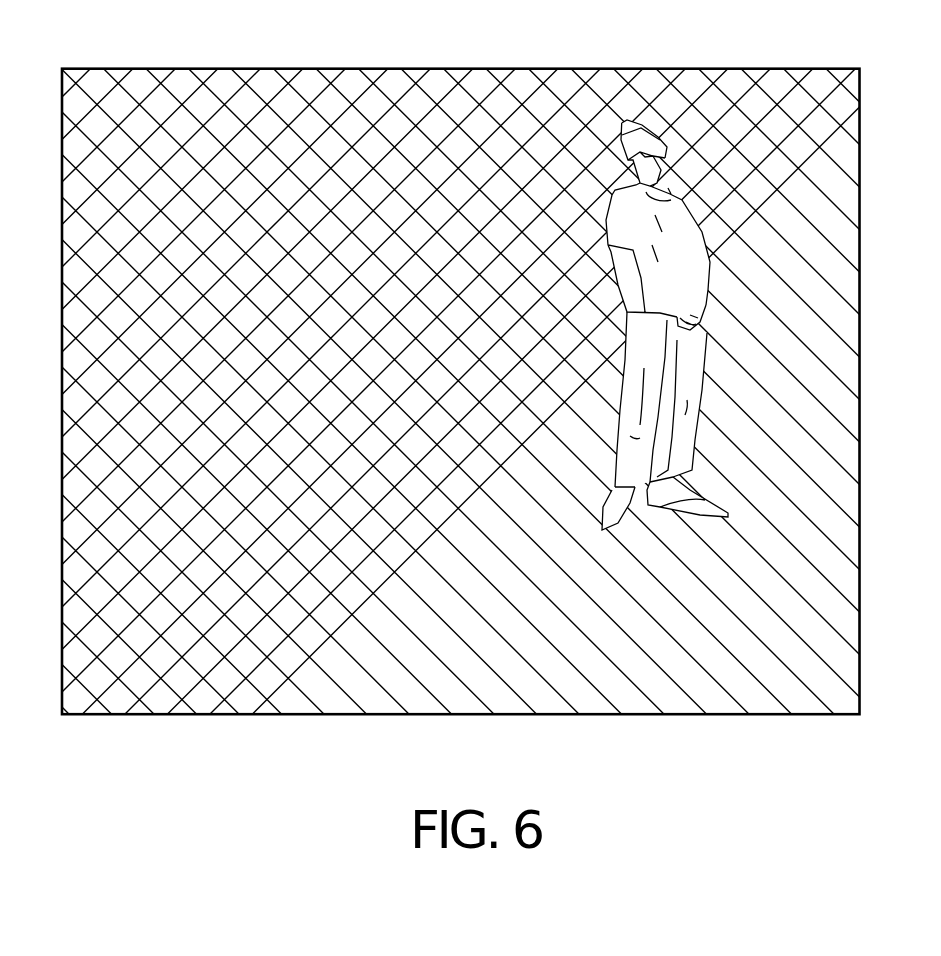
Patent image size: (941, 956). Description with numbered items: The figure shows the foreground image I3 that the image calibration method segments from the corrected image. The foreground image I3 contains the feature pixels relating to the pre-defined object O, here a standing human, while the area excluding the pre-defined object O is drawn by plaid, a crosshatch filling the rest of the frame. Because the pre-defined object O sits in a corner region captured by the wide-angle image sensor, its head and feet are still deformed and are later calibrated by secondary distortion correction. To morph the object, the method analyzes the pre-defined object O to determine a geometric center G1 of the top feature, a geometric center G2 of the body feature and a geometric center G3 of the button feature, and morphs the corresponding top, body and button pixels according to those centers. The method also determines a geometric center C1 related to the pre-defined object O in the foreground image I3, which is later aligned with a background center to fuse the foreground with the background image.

The foreground image I3 is at (470, 418).
The pre-defined object O is at (761, 277).
The geometric center of the top feature G1 is at (640, 118).
The geometric center related to the pre-defined object C1 is at (675, 247).
The geometric center of the body feature G2 is at (681, 287).
The geometric center of the button feature G3 is at (680, 357).